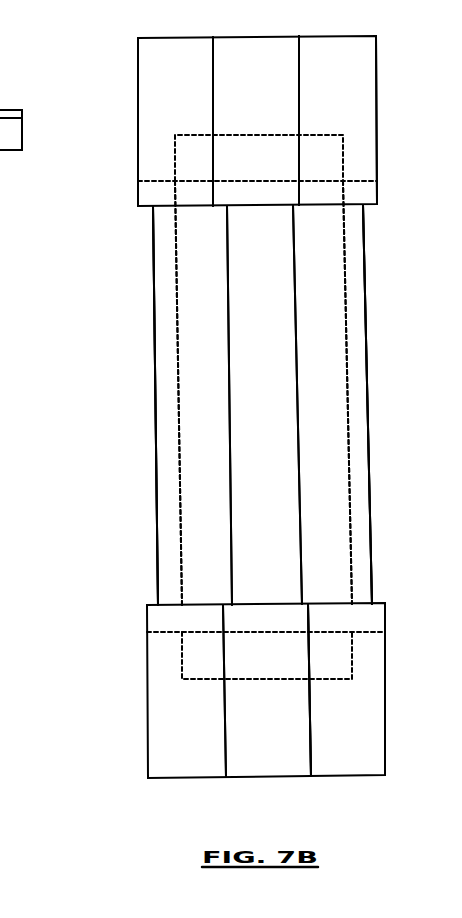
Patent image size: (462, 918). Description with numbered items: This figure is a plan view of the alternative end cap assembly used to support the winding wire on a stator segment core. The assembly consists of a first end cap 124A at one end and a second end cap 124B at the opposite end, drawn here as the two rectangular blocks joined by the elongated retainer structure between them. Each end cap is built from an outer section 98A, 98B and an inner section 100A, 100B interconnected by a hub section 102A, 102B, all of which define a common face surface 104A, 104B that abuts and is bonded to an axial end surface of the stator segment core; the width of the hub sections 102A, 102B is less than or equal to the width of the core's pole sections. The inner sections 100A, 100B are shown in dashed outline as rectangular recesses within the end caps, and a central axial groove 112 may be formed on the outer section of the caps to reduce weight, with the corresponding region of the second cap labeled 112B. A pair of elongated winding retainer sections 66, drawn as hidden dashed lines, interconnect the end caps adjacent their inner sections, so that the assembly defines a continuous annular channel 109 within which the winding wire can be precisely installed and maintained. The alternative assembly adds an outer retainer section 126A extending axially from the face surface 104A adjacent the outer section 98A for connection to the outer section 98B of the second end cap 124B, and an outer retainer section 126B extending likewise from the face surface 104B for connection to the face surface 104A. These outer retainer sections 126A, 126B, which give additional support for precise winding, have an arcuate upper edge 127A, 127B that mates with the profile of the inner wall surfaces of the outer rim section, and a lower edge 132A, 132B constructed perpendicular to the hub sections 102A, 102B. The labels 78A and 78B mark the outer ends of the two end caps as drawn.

The winding retainer section 66 is at (398, 400).
The first end block 78A is at (163, 38).
The second end block 78B is at (352, 778).
The outer section 98A is at (357, 110).
The outer section 98B is at (367, 708).
The inner section 100A is at (173, 143).
The inner section 100B is at (182, 658).
The hub section 102A is at (267, 190).
The hub section 102B is at (266, 615).
The common face surface 104A is at (363, 207).
The common face surface 104B is at (358, 602).
The continuous annular channel 109 is at (14, 161).
The central axial groove 112 is at (233, 68).
The second center cell 112B is at (267, 761).
The first end cap 124A is at (102, 80).
The second end cap 124B is at (132, 728).
The outer retainer section 126A is at (222, 378).
The outer retainer section 126B is at (342, 378).
The arcuate upper edge 127A is at (197, 489).
The arcuate upper edge 127B is at (330, 487).
The lower edge 132A is at (230, 533).
The lower edge 132B is at (297, 546).